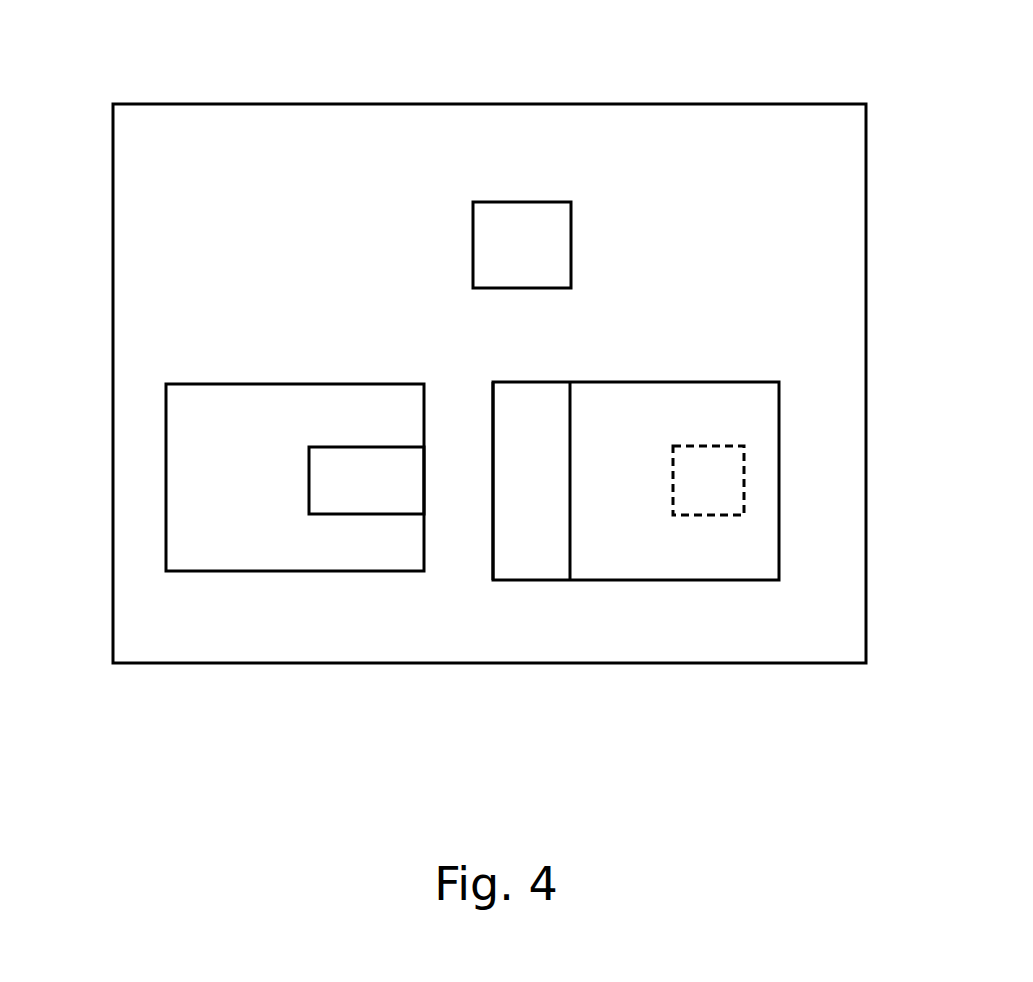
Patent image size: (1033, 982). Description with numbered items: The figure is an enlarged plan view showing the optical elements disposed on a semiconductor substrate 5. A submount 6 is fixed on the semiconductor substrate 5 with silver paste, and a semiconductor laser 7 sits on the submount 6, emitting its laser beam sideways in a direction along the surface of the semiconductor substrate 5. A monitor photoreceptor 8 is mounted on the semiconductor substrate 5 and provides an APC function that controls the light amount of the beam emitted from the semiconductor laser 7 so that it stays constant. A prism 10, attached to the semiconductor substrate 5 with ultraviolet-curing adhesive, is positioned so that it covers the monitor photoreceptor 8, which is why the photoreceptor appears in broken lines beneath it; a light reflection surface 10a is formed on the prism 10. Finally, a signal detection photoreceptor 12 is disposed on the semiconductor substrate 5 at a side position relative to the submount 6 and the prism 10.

The semiconductor substrate 5 is at (672, 628).
The submount 6 is at (183, 536).
The semiconductor laser 7 is at (320, 480).
The monitor photoreceptor 8 is at (744, 472).
The prism 10 is at (545, 580).
The light reflection surface 10a is at (510, 530).
The signal detection photoreceptor 12 is at (522, 217).